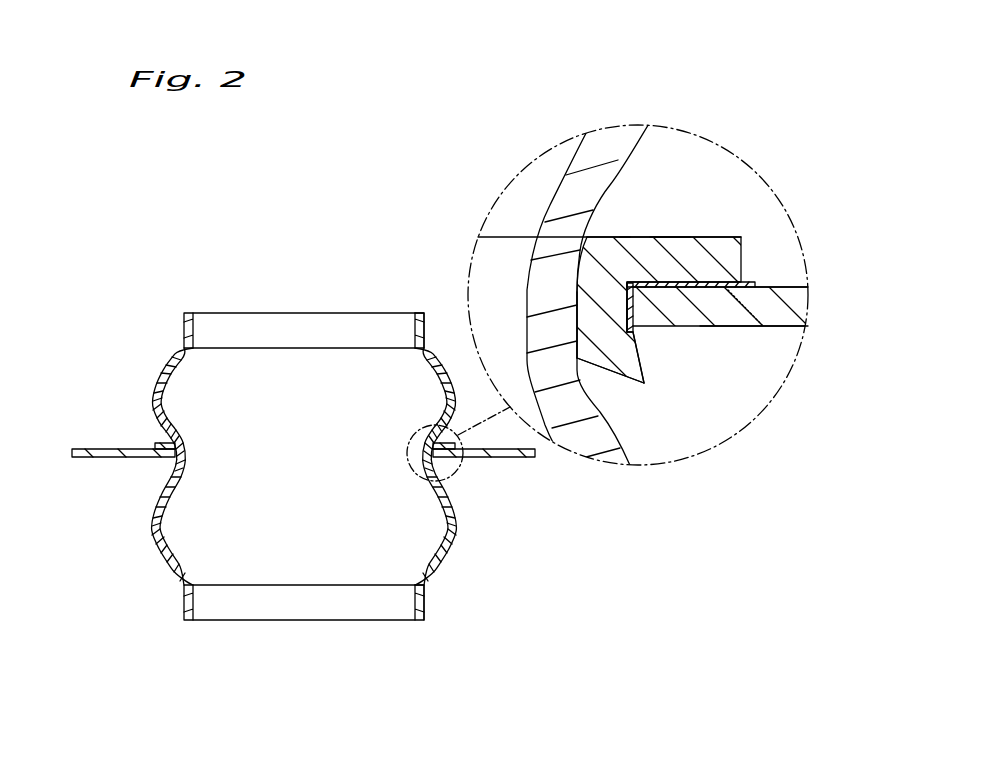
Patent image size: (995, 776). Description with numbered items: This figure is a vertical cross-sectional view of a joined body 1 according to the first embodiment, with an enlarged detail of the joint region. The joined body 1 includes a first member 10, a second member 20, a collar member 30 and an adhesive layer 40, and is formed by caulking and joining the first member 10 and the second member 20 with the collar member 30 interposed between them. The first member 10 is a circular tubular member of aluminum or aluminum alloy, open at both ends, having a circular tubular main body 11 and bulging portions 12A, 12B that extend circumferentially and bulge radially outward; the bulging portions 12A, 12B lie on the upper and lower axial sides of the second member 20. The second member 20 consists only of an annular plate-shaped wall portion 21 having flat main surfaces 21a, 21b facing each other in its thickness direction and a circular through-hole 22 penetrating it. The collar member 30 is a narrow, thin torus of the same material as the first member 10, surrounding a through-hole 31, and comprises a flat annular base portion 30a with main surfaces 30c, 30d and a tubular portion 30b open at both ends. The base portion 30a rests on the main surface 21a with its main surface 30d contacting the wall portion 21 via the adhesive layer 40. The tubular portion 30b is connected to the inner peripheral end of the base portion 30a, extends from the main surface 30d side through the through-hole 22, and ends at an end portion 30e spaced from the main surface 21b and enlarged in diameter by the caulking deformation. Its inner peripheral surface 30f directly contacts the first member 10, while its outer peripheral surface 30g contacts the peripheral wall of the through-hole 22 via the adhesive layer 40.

The joined body 1 is at (150, 213).
The first member 10 is at (183, 327).
The main body 11 is at (421, 332).
The bulging portion 12A is at (173, 370).
The bulging portion 12B is at (156, 525).
The second member 20 is at (118, 450).
The wall portion 21 is at (724, 308).
The main surface 21a is at (775, 287).
The main surface 21b is at (767, 326).
The through-hole 22 is at (628, 333).
The collar member 30 is at (170, 463).
The base portion 30a is at (703, 240).
The tubular portion 30b is at (577, 273).
The main surface 30c is at (665, 240).
The main surface 30d is at (618, 245).
The end portion 30e is at (632, 292).
The inner peripheral surface 30f is at (577, 347).
The outer peripheral surface 30g is at (634, 290).
The through-hole 31 is at (500, 248).
The adhesive layer 40 is at (748, 281).